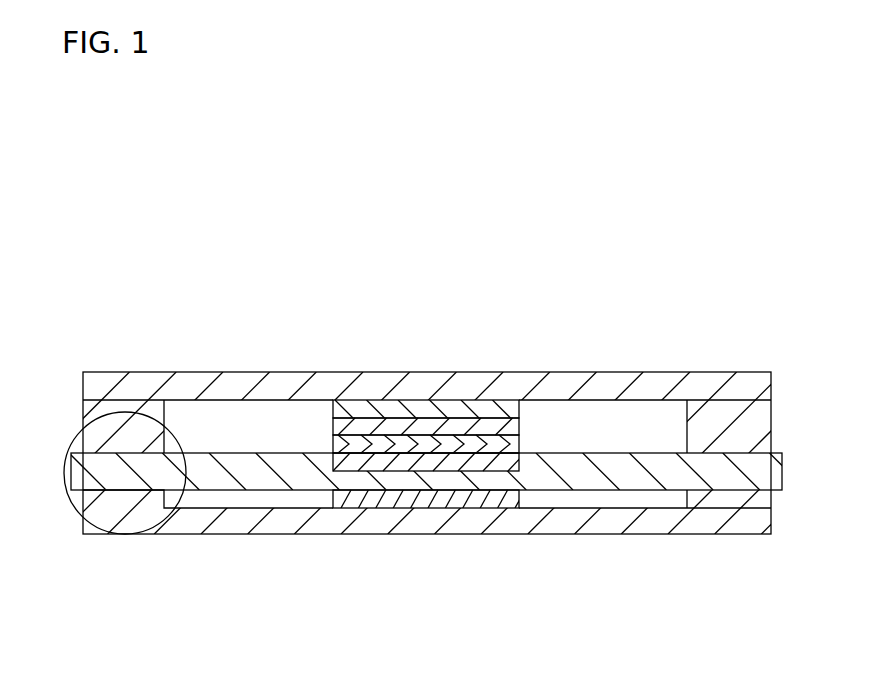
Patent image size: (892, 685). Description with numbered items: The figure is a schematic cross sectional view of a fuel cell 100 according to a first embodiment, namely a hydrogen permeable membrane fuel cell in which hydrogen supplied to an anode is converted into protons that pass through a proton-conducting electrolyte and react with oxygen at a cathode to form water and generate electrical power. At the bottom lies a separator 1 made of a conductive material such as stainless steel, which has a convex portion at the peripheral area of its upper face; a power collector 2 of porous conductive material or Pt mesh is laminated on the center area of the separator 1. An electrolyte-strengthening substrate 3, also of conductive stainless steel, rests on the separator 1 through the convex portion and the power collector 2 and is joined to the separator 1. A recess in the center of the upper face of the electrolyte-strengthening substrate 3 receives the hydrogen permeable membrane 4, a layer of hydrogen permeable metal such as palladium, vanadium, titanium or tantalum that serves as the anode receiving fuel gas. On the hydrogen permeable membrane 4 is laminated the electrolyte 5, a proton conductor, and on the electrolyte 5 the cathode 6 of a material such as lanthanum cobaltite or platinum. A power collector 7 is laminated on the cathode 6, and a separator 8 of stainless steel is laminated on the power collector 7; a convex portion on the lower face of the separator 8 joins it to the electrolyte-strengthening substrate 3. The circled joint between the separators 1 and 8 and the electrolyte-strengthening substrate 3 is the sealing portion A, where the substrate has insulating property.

The fuel cell 100 is at (427, 393).
The separator 1 is at (446, 484).
The separator 8 is at (446, 422).
The electrolyte-strengthening substrate 3 is at (442, 439).
The power collector 7 is at (426, 367).
The cathode 6 is at (426, 380).
The electrolyte 5 is at (426, 394).
The hydrogen permeable membrane 4 is at (429, 512).
The power collector 2 is at (429, 541).
The sealing portion A is at (104, 463).